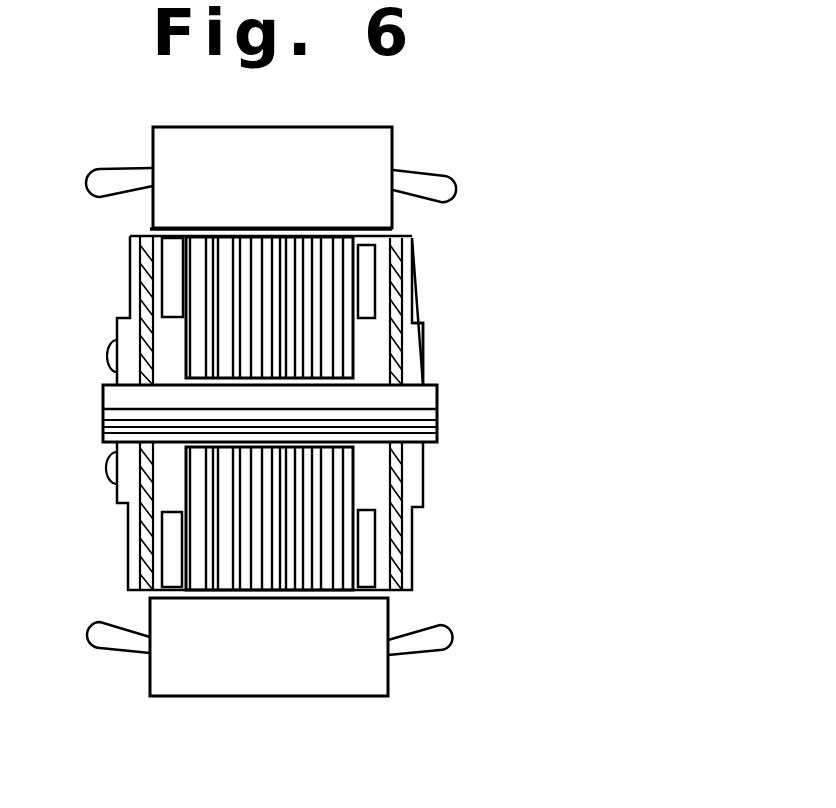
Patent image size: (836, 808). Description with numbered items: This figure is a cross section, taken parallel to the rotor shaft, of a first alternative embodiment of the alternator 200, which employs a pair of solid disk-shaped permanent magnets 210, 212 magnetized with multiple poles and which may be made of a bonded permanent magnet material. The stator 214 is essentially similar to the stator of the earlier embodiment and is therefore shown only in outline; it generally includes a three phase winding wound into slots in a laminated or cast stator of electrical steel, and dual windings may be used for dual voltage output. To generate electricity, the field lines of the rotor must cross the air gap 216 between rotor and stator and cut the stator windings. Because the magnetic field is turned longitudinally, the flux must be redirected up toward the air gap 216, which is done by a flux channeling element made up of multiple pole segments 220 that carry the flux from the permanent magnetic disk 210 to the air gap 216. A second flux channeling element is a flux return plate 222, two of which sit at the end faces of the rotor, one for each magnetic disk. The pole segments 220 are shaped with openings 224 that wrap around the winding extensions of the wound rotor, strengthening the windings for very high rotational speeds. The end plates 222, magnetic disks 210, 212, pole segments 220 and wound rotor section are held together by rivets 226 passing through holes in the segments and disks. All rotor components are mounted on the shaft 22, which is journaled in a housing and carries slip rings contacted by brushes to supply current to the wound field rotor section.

The alternator 200 is at (453, 227).
The permanent magnetic disk 210 is at (412, 260).
The permanent magnetic disk 212 is at (138, 250).
The stator 214 is at (353, 140).
The air gap 216 is at (150, 228).
The pole segments 220 is at (383, 306).
The flux return plate 222 is at (412, 365).
The openings 224 is at (363, 537).
The rivets 226 is at (112, 352).
The shaft 22 is at (440, 413).